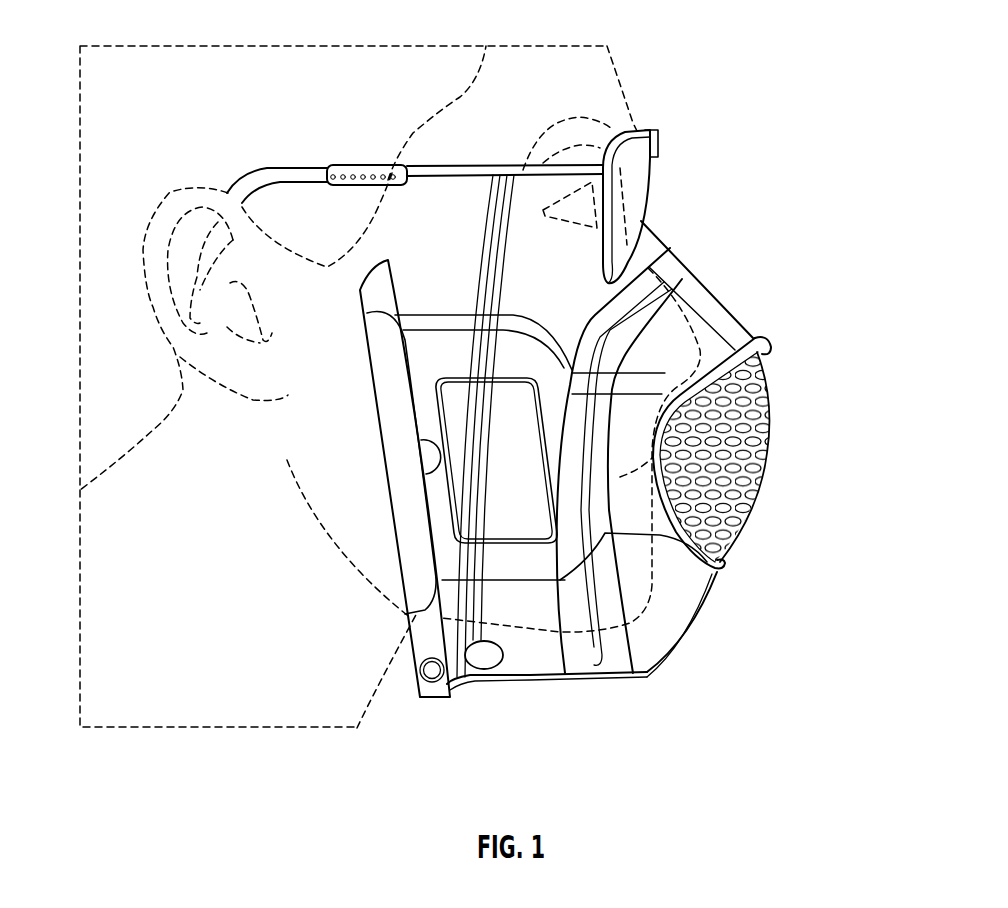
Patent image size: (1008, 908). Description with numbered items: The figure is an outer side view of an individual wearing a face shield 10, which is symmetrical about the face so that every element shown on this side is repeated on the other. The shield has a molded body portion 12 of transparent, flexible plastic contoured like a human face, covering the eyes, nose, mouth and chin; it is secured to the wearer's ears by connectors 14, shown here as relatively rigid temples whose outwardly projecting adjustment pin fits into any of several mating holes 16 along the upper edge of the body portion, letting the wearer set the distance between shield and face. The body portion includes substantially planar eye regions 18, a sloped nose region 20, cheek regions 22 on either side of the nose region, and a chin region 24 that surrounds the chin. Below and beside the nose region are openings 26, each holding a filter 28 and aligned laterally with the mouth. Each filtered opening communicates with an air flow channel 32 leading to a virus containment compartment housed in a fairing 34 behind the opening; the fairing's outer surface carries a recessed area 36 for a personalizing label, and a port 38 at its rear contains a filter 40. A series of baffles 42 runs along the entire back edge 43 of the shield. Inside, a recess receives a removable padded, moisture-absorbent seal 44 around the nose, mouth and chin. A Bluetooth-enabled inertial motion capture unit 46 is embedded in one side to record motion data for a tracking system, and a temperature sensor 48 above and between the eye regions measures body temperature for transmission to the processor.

The face shield 10 is at (707, 210).
The molded body portion 12 is at (701, 627).
The connectors 14 is at (305, 200).
The mating holes 16 is at (380, 162).
The eye regions 18 is at (653, 183).
The nose region 20 is at (700, 298).
The cheek regions 22 is at (589, 314).
The chin region 24 is at (525, 677).
The openings 26 is at (763, 337).
The filter 28 is at (760, 422).
The air flow channel 32 is at (626, 513).
The fairing 34 is at (520, 343).
The recessed area 36 is at (467, 390).
The port 38 is at (425, 500).
The filter 40 is at (423, 447).
The baffles 42 is at (420, 624).
The back edge 43 is at (403, 584).
The seal 44 is at (622, 657).
The inertial motion capture unit 46 is at (483, 670).
The temperature sensor 48 is at (657, 130).